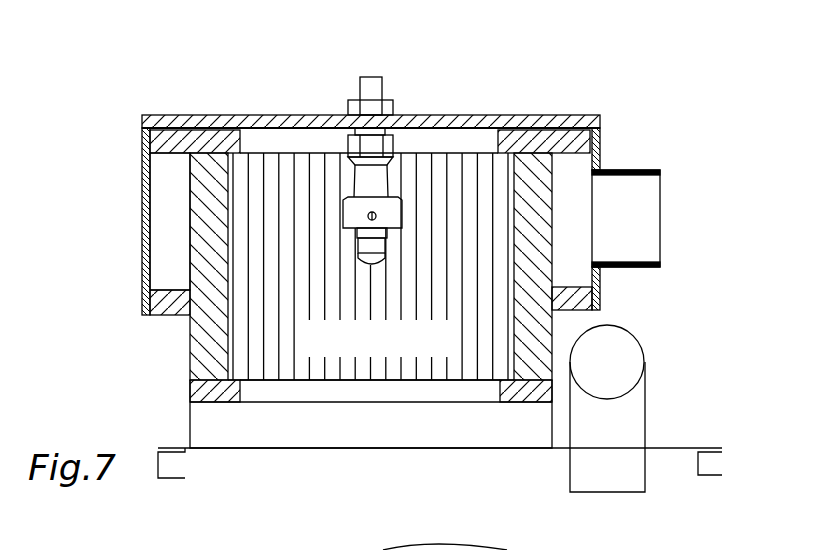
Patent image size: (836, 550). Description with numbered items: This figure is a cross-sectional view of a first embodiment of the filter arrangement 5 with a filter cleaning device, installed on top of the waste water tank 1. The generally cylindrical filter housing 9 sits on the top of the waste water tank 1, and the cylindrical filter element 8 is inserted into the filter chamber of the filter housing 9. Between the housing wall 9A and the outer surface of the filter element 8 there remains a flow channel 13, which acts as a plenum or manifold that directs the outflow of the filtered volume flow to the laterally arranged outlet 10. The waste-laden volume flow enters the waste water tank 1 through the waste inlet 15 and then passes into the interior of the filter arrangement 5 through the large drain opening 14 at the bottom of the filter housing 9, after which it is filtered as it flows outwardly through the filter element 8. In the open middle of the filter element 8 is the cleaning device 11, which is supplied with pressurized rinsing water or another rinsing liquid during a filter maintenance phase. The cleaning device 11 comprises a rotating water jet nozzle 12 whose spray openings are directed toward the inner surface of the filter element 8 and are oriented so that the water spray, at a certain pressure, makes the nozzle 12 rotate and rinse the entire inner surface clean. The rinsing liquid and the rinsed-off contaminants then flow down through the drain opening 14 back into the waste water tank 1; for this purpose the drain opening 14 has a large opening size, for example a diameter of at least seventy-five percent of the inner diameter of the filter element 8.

The waste water tank 1 is at (380, 492).
The filter arrangement 5 is at (118, 110).
The cylindrical filter element 8 is at (540, 298).
The filter housing 9 is at (600, 157).
The housing wall 9A is at (160, 268).
The outlet 10 is at (640, 170).
The cleaning device 11 is at (348, 101).
The rotating water jet nozzle 12 is at (392, 215).
The flow channel 13 is at (168, 230).
The drain opening 14 is at (305, 393).
The waste inlet 15 is at (633, 418).